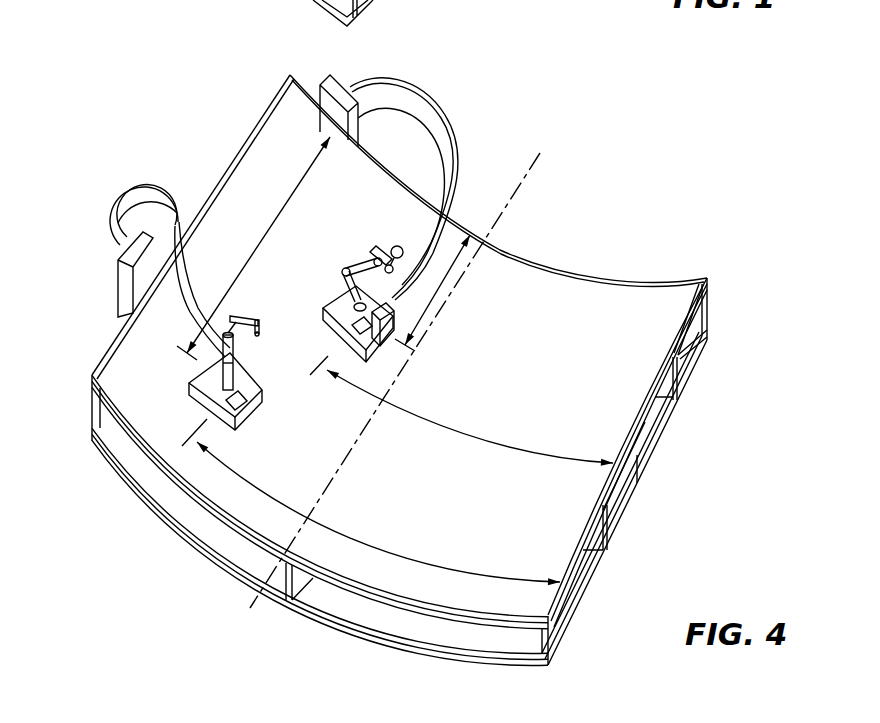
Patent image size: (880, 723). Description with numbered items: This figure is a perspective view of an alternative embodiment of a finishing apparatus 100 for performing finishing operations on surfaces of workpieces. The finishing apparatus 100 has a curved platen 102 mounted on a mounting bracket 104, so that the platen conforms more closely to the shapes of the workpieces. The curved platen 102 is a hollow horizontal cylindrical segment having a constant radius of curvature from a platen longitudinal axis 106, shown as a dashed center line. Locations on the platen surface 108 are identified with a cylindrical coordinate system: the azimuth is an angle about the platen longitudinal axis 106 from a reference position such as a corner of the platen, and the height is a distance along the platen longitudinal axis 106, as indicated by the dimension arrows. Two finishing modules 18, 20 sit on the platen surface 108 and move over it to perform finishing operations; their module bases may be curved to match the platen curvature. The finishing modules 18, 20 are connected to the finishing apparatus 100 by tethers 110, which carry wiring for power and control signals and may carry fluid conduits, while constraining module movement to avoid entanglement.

The finishing apparatus 100 is at (115, 57).
The curved platen 102 is at (628, 282).
The mounting bracket 104 is at (123, 473).
The platen longitudinal axis 106 is at (528, 175).
The platen surface 108 is at (576, 371).
The tethers 110 is at (147, 180).
The finishing module 18 is at (257, 418).
The finishing module 20 is at (333, 298).